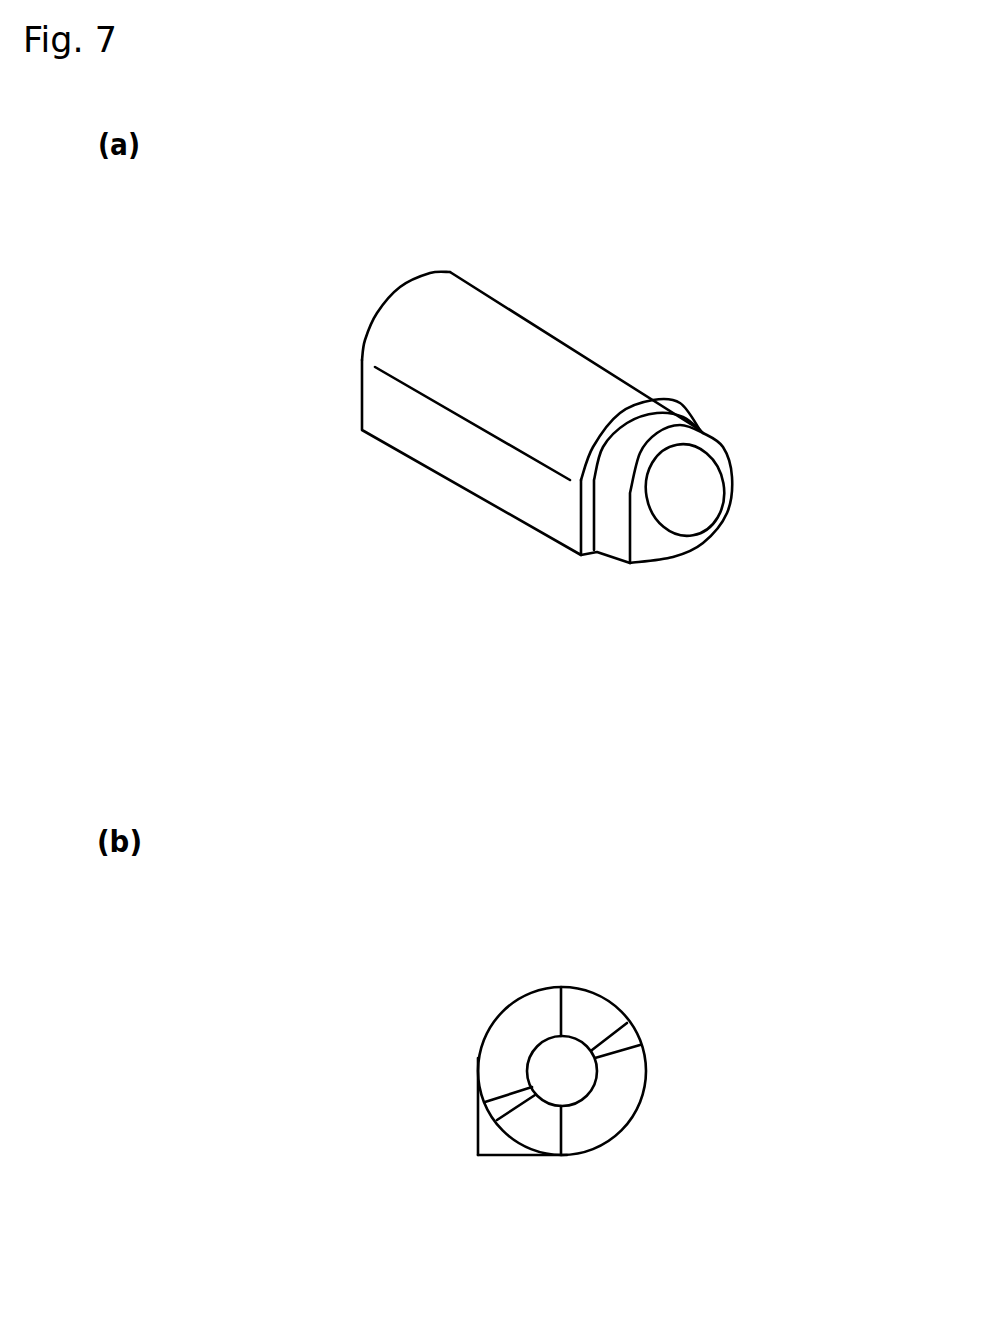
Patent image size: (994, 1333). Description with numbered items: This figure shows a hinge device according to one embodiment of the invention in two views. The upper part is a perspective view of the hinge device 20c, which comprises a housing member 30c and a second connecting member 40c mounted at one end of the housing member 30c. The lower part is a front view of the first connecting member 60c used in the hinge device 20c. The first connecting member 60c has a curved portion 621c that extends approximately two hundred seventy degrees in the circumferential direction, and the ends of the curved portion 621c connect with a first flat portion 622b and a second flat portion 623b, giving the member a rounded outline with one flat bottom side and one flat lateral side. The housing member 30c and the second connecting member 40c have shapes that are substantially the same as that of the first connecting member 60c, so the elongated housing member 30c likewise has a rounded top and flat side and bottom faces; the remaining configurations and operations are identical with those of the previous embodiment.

The hinge device 20c is at (752, 338).
The housing member 30c is at (535, 333).
The second connecting member 40c is at (723, 495).
The first connecting member 60c is at (708, 1027).
The curved portion 621c is at (600, 995).
The first flat portion 622b is at (500, 1157).
The second flat portion 623b is at (478, 1123).